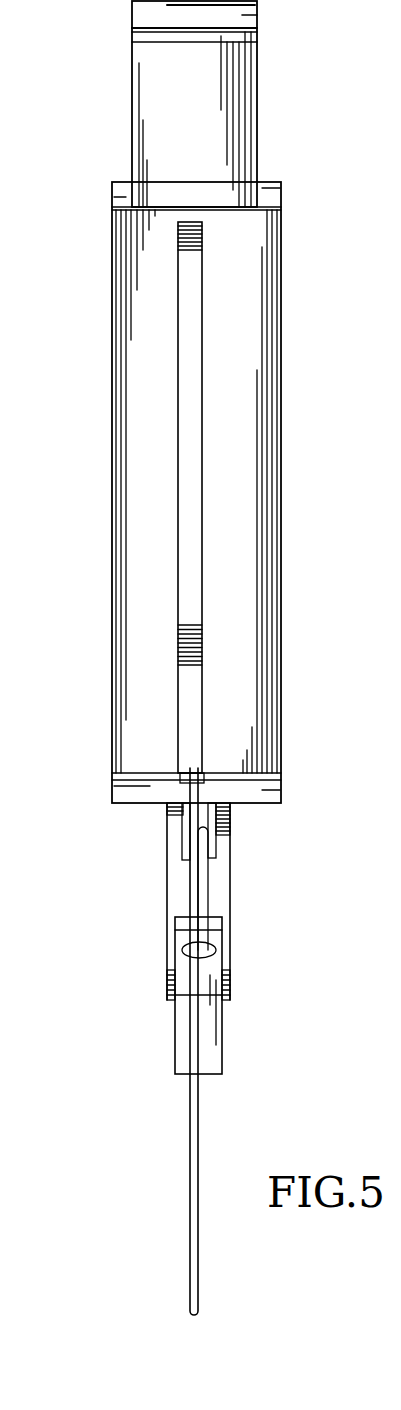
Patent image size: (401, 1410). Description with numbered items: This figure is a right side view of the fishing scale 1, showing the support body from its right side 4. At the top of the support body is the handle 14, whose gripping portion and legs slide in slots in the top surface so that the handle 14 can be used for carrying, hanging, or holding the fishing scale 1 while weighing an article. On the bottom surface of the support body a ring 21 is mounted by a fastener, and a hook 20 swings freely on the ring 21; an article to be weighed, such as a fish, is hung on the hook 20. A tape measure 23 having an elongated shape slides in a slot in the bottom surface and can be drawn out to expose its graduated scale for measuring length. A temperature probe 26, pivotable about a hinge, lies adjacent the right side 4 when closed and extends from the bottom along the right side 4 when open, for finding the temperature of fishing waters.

The fishing scale 1 is at (58, 337).
The handle 14 is at (175, 107).
The right side 4 is at (236, 407).
The ring 21 is at (202, 842).
The tape measure 23 is at (220, 893).
The hook 20 is at (208, 1037).
The temperature probe 26 is at (190, 1212).